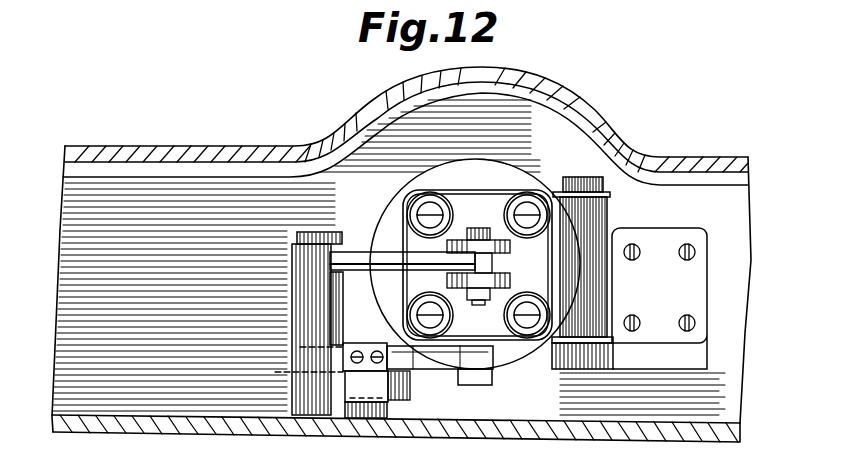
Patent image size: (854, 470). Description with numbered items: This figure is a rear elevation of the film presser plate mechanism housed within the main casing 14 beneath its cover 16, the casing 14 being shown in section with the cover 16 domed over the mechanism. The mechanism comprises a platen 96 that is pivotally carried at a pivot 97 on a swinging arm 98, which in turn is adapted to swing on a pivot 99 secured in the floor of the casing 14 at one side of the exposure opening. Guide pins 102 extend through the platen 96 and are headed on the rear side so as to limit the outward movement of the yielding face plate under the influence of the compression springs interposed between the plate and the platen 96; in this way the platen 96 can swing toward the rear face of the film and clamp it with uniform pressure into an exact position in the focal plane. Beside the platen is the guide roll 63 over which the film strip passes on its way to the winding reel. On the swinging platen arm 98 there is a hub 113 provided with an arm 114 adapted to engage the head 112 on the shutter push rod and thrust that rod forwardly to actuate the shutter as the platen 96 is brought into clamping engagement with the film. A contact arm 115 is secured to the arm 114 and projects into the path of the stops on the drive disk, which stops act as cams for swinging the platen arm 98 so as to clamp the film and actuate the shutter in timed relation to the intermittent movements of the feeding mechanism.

The casing 14 is at (212, 428).
The cover 16 is at (682, 158).
The guide roll 63 is at (593, 234).
The platen 96 is at (478, 195).
The pivot 97 is at (470, 230).
The arm 98 is at (362, 254).
The pivot 99 is at (337, 205).
The guide pins 102 is at (428, 207).
The head 112 is at (490, 357).
The hub 113 is at (330, 326).
The arm 114 is at (440, 358).
The contact arm 115 is at (377, 400).